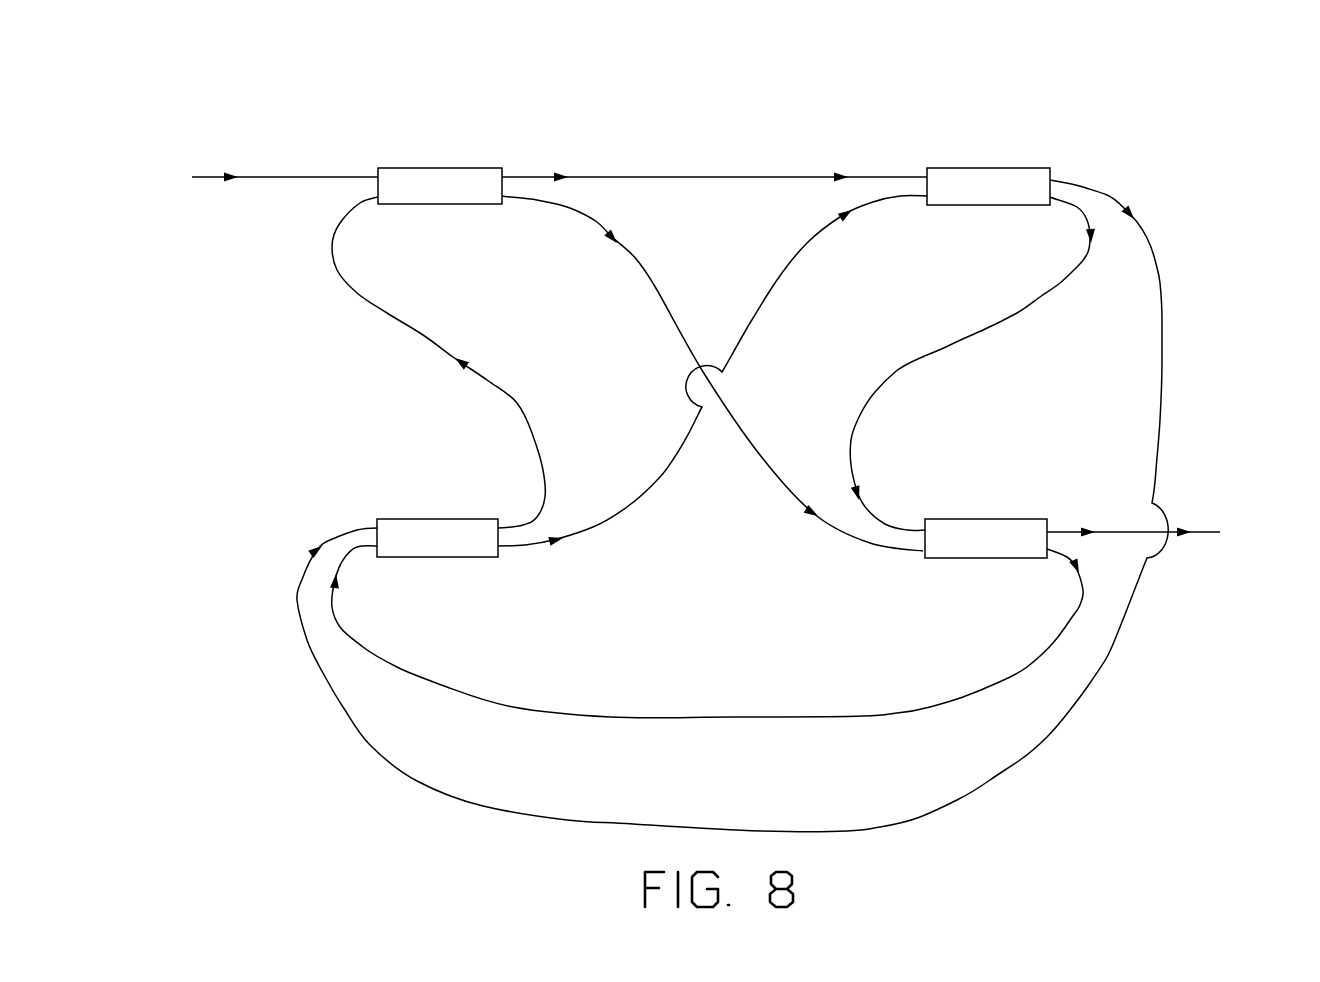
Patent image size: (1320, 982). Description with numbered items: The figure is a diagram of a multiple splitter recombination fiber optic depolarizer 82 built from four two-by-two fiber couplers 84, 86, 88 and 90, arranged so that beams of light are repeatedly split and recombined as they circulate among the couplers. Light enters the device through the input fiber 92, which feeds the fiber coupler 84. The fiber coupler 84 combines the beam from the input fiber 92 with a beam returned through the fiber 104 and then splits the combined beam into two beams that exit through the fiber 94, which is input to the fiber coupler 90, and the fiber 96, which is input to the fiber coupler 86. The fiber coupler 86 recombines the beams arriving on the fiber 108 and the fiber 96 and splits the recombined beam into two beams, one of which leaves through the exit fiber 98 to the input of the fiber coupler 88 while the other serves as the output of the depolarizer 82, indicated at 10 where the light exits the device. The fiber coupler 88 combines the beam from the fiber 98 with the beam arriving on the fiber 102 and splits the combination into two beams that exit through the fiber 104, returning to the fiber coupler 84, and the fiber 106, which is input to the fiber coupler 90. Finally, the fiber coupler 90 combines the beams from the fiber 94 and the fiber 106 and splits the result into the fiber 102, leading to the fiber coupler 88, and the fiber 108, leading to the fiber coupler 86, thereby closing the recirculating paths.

The output light 10 is at (1214, 521).
The multiple splitter recombination depolarizer 82 is at (716, 110).
The fiber coupler 84 is at (427, 153).
The fiber coupler 86 is at (987, 509).
The fiber coupler 88 is at (410, 508).
The fiber coupler 90 is at (985, 159).
The input fiber 92 is at (258, 165).
The fiber 94 is at (588, 161).
The fiber 96 is at (599, 210).
The exit fiber 98 is at (1064, 605).
The fiber 102 is at (1110, 185).
The fiber 104 is at (522, 397).
The fiber 106 is at (619, 526).
The fiber 108 is at (1074, 294).